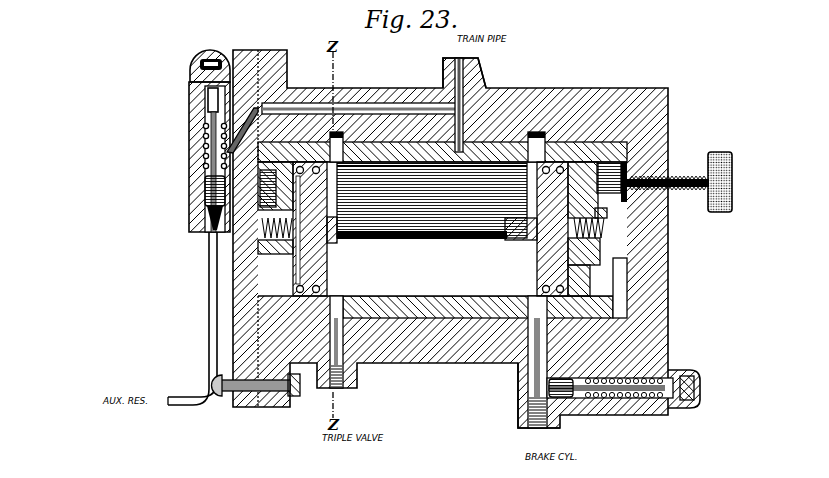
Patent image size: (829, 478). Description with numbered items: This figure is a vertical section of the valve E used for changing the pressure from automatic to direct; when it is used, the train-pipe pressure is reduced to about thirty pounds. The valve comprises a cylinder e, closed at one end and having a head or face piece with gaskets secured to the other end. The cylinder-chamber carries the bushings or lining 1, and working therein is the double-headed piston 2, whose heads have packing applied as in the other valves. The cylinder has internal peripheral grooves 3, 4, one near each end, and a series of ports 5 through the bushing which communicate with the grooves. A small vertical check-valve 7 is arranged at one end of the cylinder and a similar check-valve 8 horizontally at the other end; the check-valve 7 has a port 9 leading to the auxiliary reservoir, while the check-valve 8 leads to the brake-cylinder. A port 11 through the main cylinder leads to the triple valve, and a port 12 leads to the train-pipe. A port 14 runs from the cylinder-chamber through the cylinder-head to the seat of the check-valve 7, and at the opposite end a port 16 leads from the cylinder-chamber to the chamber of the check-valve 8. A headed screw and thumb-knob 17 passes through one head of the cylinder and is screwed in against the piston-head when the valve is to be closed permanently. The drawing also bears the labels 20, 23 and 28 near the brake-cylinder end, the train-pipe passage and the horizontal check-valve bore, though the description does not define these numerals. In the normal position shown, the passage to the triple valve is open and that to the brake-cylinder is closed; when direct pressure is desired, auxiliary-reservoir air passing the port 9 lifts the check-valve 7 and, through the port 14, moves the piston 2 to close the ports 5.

The valve E is at (450, 239).
The cylinder e is at (668, 302).
The bushings or lining 1 is at (352, 405).
The double-headed piston 2 is at (523, 239).
The internal peripheral groove 3 is at (348, 128).
The internal peripheral groove 4 is at (543, 132).
The ports 5 is at (338, 316).
The small vertical check-valve 7 is at (205, 137).
The check-valve 8 is at (700, 385).
The port 9 is at (212, 232).
The port 11 is at (432, 214).
The port 12 is at (465, 72).
The port 14 is at (256, 201).
The port 16 is at (617, 296).
The headed screw and thumb-knob 17 is at (732, 198).
The brake cylinder boss 20 is at (539, 404).
The passage 23 is at (411, 104).
The plunger 28 is at (562, 387).